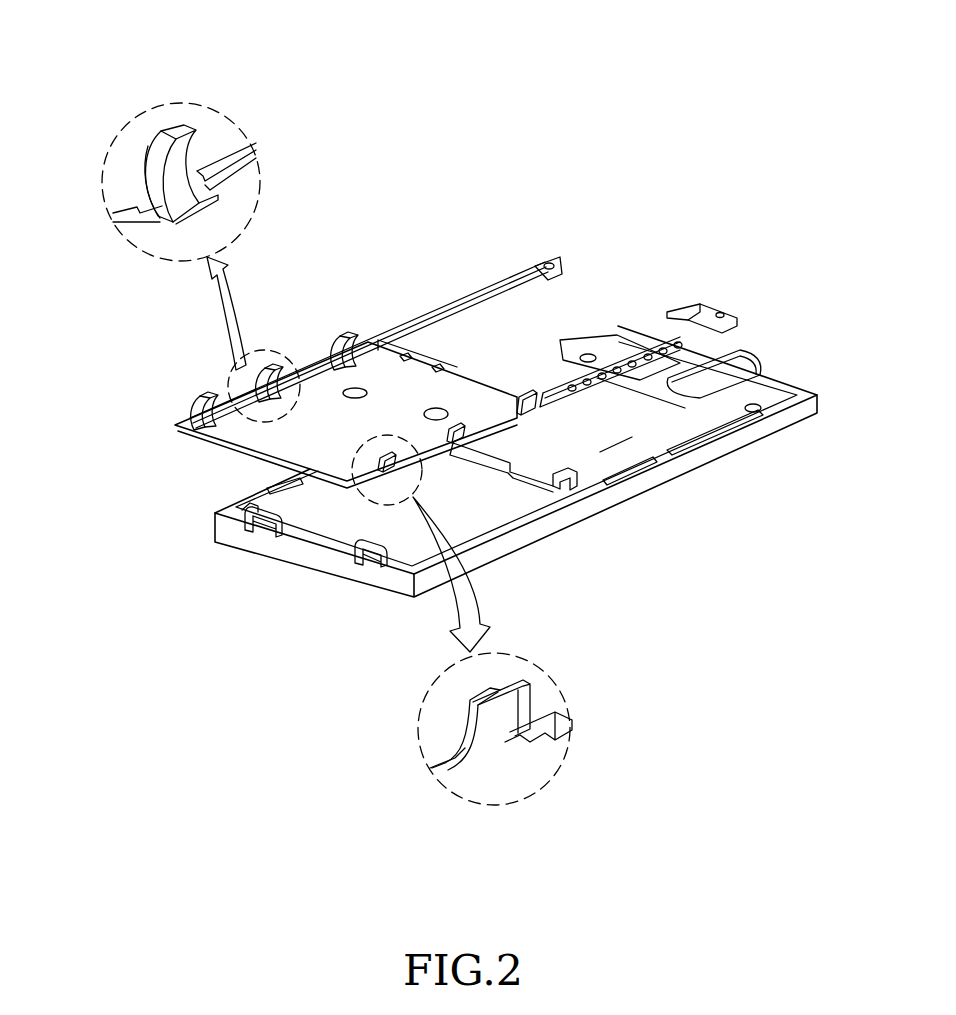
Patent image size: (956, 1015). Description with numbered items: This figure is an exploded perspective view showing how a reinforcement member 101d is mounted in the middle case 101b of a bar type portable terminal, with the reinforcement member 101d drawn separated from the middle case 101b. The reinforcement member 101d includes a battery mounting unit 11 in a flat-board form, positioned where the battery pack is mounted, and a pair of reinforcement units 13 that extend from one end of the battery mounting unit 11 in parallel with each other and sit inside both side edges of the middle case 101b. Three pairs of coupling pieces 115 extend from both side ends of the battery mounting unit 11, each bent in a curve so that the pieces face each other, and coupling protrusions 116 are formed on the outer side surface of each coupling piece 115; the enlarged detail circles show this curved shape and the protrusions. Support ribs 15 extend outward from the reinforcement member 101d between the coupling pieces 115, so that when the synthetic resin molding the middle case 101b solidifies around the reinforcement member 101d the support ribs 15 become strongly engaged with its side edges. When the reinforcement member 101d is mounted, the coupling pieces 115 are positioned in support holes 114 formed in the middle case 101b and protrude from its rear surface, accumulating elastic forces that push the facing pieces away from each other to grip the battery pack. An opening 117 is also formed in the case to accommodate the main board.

The battery mounting unit 11 is at (270, 440).
The reinforcement units 13 is at (467, 297).
The support ribs 15 is at (212, 398).
The middle case 101b is at (826, 387).
The reinforcement member 101d is at (743, 322).
The support holes 114 is at (240, 500).
The coupling pieces 115 is at (160, 178).
The coupling protrusions 116 is at (183, 130).
The opening 117 is at (633, 450).